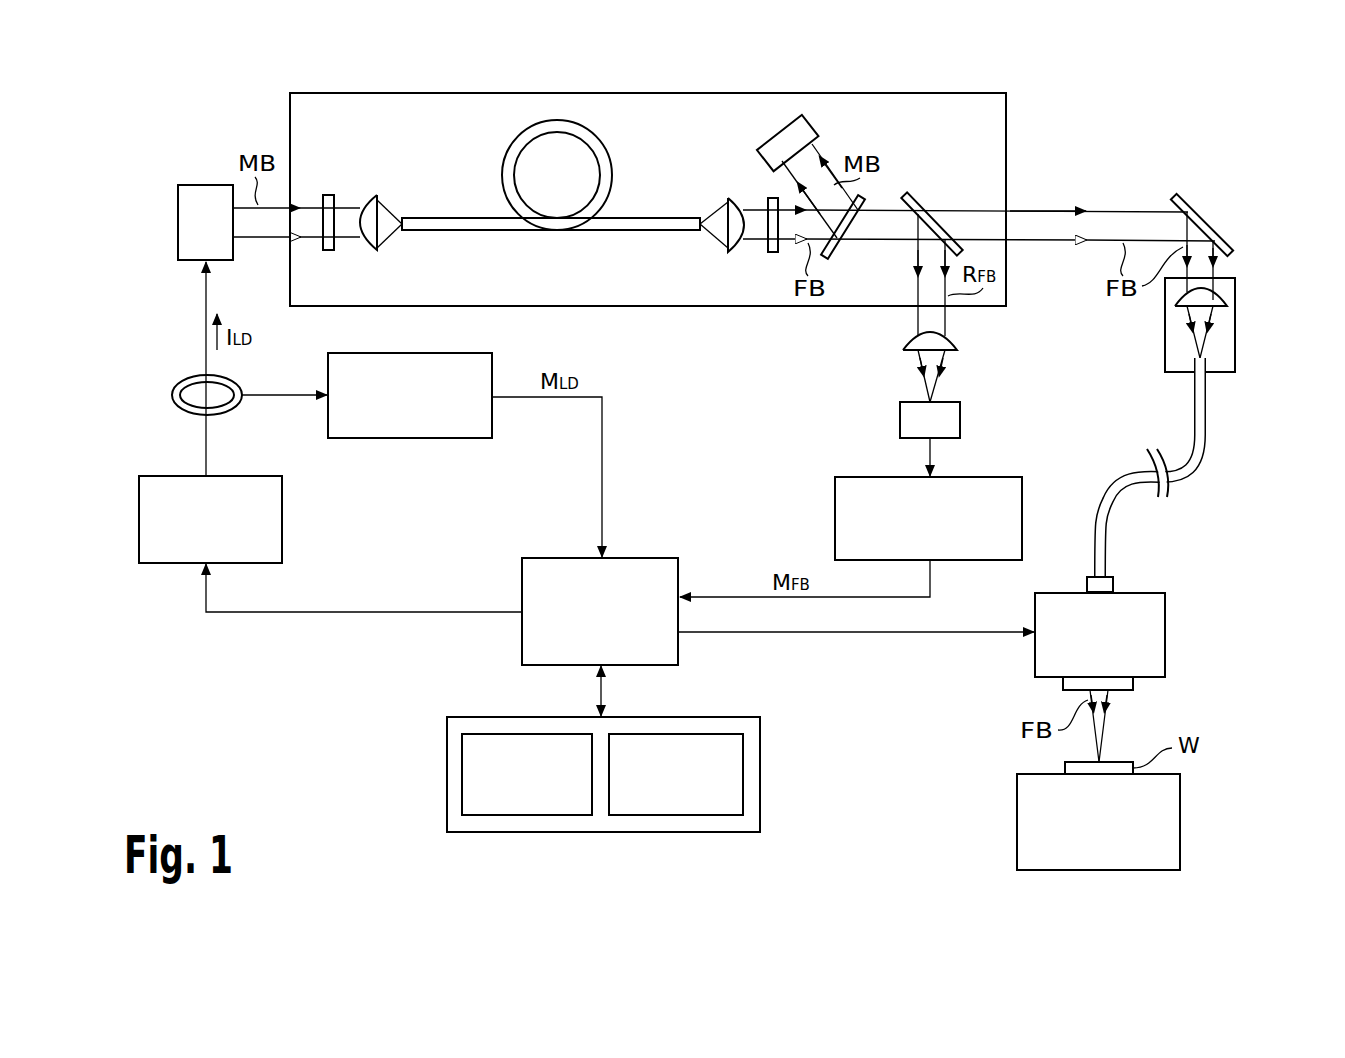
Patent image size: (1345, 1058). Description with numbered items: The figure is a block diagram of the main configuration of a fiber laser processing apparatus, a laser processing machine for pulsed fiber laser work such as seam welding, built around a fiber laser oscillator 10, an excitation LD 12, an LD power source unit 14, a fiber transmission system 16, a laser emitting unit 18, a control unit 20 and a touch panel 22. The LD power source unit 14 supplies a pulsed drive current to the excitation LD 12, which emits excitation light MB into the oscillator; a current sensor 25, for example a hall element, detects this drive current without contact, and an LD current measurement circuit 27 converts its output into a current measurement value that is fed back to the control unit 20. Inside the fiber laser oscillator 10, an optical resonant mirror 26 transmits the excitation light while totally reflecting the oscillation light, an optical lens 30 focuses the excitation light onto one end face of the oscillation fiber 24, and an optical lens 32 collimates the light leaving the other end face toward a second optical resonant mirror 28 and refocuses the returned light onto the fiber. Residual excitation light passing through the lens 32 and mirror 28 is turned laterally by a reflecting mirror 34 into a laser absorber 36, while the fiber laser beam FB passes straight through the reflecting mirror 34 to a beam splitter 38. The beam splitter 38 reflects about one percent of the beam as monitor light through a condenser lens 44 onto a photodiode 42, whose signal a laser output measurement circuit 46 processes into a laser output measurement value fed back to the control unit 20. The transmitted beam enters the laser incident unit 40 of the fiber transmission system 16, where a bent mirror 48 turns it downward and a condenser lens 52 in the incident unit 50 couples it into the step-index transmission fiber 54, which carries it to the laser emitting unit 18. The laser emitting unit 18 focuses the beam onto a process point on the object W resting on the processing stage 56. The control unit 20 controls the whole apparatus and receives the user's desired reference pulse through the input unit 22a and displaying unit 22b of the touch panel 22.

The fiber laser oscillator 10 is at (1006, 130).
The excitation LD 12 is at (207, 185).
The LD power source unit 14 is at (185, 476).
The fiber transmission system 16 is at (1151, 524).
The laser emitting unit 18 is at (1166, 633).
The control unit 20 is at (641, 558).
The touch panel 22 is at (603, 761).
The input unit 22a is at (462, 776).
The displaying unit 22b is at (743, 774).
The oscillation fiber 24 is at (610, 152).
The current sensor 25 is at (178, 378).
The optical resonant mirror 26 is at (330, 195).
The LD current measurement circuit 27 is at (492, 365).
The optical resonant mirror 28 is at (772, 254).
The optical lens 30 is at (373, 195).
The optical lens 32 is at (733, 198).
The reflecting mirror 34 is at (837, 258).
The laser absorber 36 is at (818, 130).
The beam splitter 38 is at (915, 196).
The laser incident unit 40 is at (1237, 251).
The photodiode 42 is at (961, 420).
The condenser lens 44 is at (958, 340).
The laser output measurement circuit 46 is at (835, 515).
The bent mirror 48 is at (1190, 197).
The incident unit 50 is at (1235, 325).
The condenser lens 52 is at (1228, 297).
The transmission fiber 54 is at (1103, 497).
The processing stage 56 is at (1181, 822).